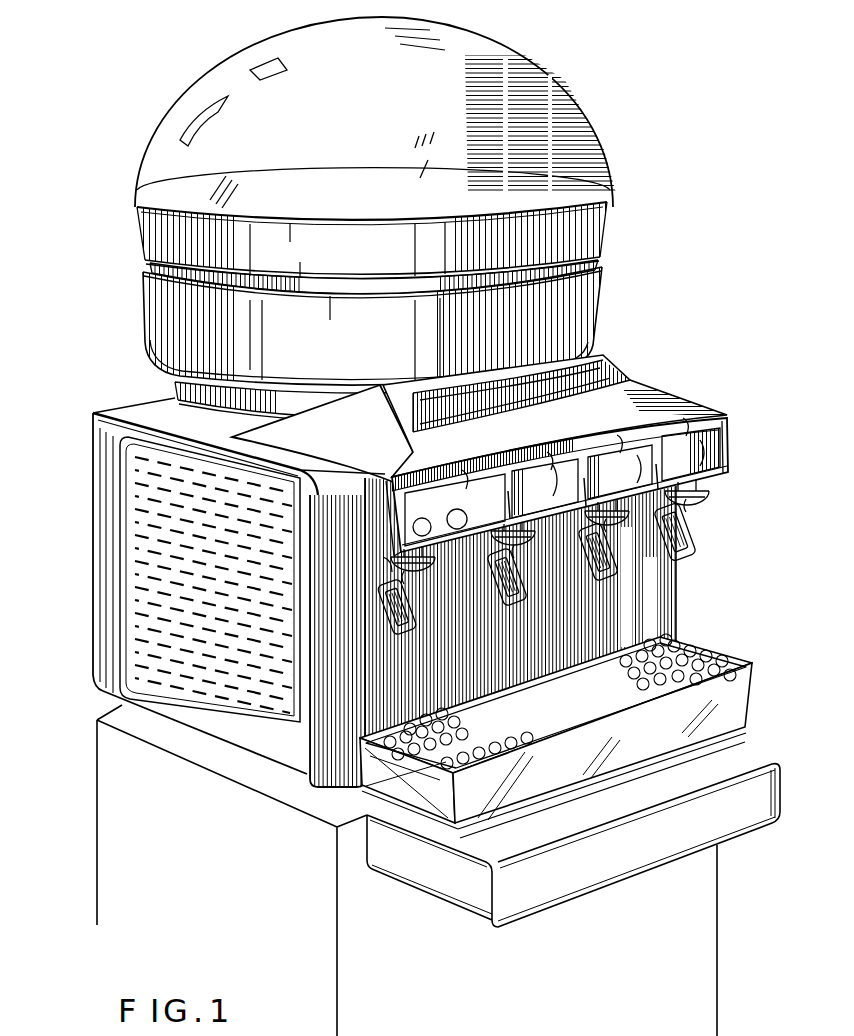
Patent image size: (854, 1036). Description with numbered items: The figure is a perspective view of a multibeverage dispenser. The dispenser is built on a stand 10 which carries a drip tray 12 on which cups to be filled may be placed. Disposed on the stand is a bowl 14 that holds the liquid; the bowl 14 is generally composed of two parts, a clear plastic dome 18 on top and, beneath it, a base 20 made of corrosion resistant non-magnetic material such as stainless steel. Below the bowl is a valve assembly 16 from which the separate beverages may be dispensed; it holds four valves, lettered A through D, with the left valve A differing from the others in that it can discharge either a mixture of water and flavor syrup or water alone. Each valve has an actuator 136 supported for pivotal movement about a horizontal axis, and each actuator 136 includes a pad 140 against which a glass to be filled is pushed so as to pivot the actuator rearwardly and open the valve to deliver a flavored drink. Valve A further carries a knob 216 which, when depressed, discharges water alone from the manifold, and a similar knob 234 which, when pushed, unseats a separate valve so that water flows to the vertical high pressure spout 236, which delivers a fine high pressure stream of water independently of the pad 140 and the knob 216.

The stand 10 is at (82, 402).
The drip tray 12 is at (692, 651).
The bowl 14 is at (398, 219).
The valve assembly 16 is at (545, 485).
The clear plastic dome 18 is at (543, 78).
The base 20 is at (612, 222).
The actuator 136 is at (490, 553).
The pad 140 is at (497, 586).
The knob 216 is at (407, 504).
The knob 234 is at (413, 527).
The vertical high pressure spout 236 is at (386, 558).